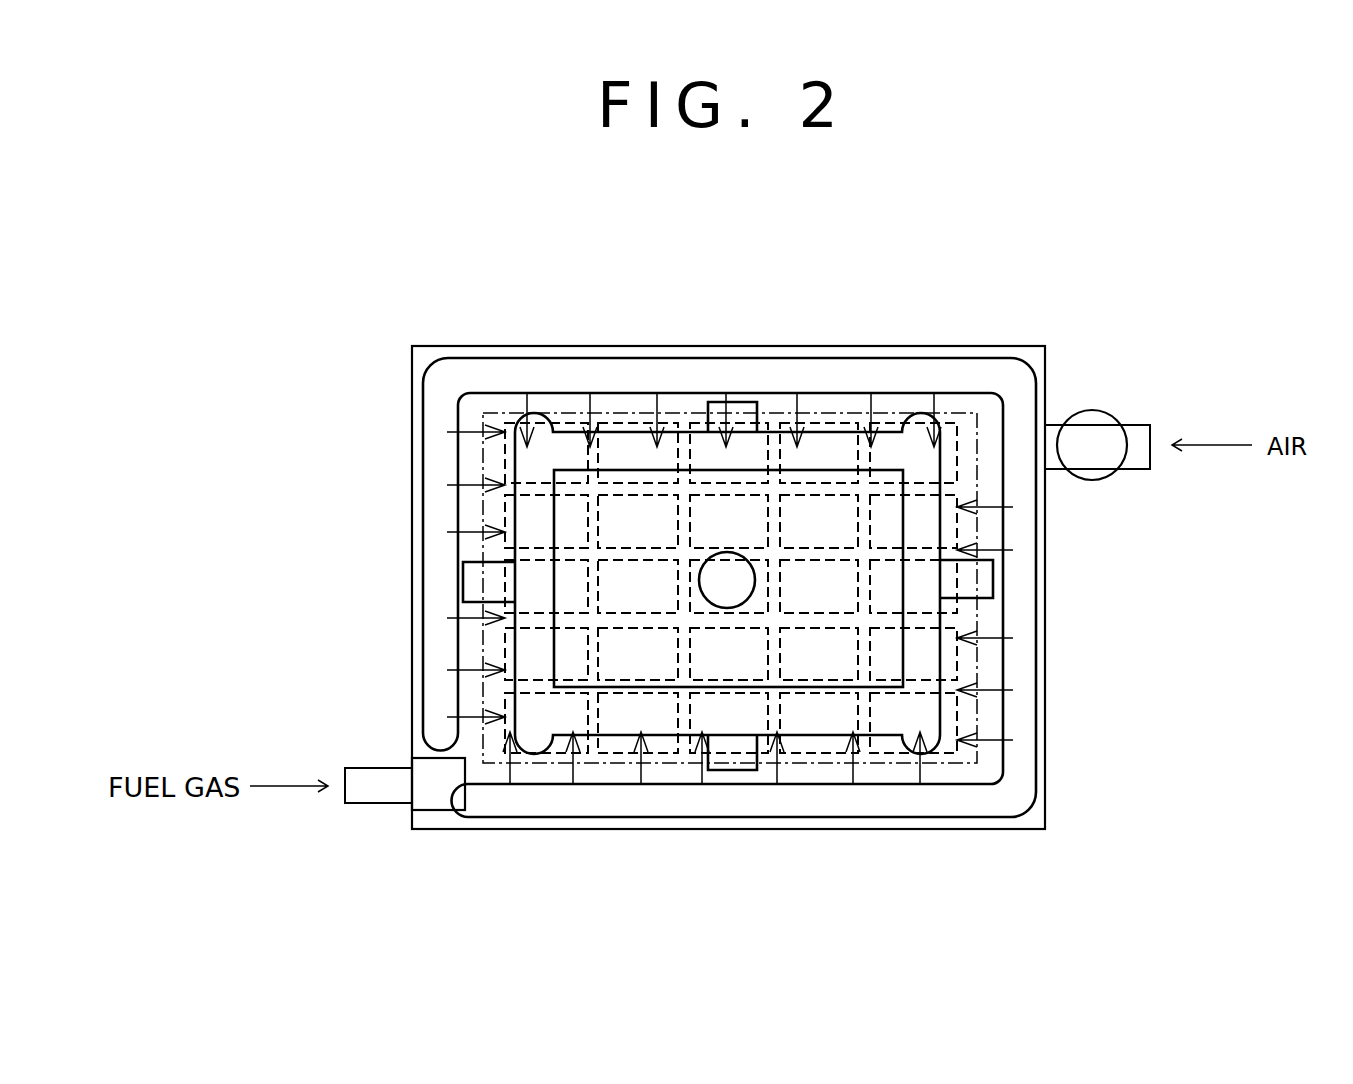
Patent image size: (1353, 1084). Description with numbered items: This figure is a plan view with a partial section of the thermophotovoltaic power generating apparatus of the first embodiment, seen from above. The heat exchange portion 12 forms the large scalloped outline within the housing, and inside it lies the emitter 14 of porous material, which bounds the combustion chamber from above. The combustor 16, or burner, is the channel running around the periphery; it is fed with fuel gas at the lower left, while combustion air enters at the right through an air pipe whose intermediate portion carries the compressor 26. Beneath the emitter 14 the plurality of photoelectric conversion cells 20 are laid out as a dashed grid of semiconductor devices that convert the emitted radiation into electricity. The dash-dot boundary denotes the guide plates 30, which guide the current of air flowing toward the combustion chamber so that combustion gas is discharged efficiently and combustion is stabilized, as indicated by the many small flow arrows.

The heat exchange portion 12 is at (818, 450).
The emitter 14 is at (867, 653).
The combustor 16 is at (758, 798).
The photoelectric conversion cells 20 is at (630, 752).
The compressor 26 is at (1092, 447).
The guide plates 30 is at (473, 456).